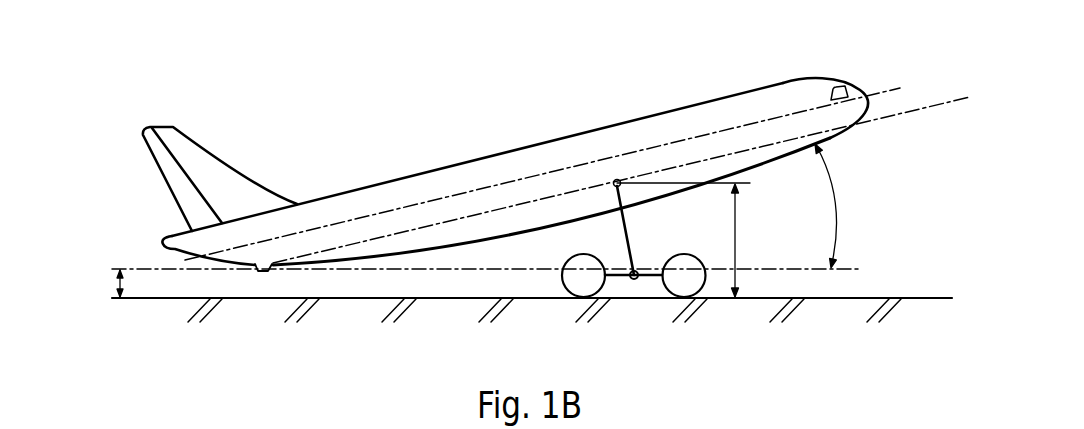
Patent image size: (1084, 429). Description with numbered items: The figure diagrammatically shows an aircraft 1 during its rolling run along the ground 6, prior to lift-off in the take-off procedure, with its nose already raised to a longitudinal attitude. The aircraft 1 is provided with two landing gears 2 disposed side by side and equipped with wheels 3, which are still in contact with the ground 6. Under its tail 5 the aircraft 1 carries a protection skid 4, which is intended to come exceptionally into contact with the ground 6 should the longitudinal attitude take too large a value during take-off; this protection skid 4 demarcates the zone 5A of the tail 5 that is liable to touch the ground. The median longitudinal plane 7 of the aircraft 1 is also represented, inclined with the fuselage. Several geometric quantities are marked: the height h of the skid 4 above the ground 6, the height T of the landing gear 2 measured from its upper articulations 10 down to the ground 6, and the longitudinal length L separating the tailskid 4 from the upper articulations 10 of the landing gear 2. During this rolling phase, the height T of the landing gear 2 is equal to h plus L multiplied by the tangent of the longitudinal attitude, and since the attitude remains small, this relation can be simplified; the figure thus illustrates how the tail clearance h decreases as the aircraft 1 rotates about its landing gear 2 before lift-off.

The aircraft 1 is at (463, 174).
The landing gear 2 is at (628, 230).
The wheels 3 is at (580, 282).
The protection skid 4 is at (262, 272).
The tail 5 is at (248, 224).
The zone of the tail 5A is at (263, 262).
The ground 6 is at (363, 300).
The median longitudinal plane 7 is at (684, 108).
The upper articulations of the landing gear 10 is at (617, 180).
The longitudinal length L is at (420, 224).
The height of the landing gear T is at (688, 240).
The height of the skid h is at (106, 284).